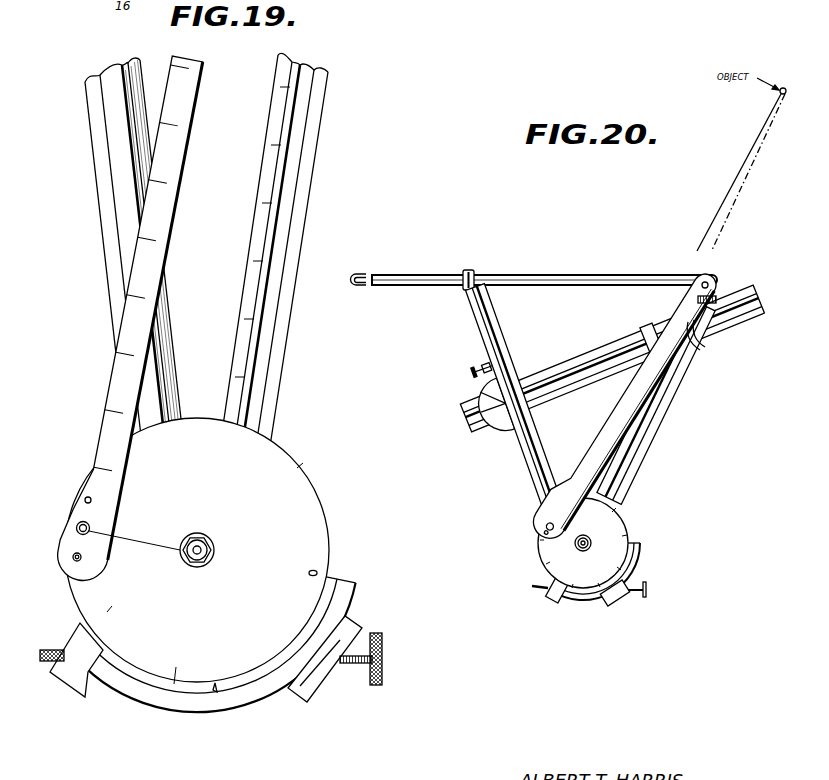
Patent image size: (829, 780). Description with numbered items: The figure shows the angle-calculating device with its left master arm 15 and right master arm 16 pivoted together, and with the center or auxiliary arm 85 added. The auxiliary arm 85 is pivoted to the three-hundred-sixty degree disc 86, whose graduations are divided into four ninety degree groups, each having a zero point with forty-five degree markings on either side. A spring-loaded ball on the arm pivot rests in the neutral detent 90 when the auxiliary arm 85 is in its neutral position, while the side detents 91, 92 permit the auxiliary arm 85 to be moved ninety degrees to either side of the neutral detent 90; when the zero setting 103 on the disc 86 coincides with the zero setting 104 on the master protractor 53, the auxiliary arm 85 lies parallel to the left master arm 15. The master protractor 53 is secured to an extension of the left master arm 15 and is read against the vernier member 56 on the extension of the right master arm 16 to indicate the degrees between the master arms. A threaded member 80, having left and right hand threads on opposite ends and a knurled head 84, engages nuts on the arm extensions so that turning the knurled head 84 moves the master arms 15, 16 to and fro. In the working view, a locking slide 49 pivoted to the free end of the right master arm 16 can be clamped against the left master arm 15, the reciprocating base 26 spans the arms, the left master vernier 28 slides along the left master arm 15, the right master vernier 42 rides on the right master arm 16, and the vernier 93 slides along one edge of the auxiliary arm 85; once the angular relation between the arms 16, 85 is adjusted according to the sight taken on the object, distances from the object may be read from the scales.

In FIG. 19, the left master arm 15 is at (98, 181).
In FIG. 20, the left master arm 15 is at (537, 471).
In FIG. 19, the right master arm 16 is at (310, 183).
In FIG. 20, the right master arm 16 is at (633, 469).
In FIG. 19, the center or auxiliary arm 85 is at (194, 104).
In FIG. 20, the center or auxiliary arm 85 is at (613, 418).
In FIG. 19, the 360 degree disc 86 is at (296, 463).
In FIG. 20, the 360 degree disc 86 is at (628, 527).
In FIG. 19, the neutral detent 90 is at (115, 532).
In FIG. 19, the detent 91 is at (72, 561).
In FIG. 19, the detent 92 is at (86, 497).
In FIG. 19, the zero setting on the disc 103 is at (309, 573).
In FIG. 19, the zero setting on the master protractor 104 is at (216, 686).
In FIG. 19, the master protractor 53 is at (140, 708).
In FIG. 20, the master protractor 53 is at (571, 597).
In FIG. 19, the knurled head 84 is at (383, 645).
In FIG. 20, the locking slide 49 is at (528, 274).
In FIG. 20, the reciprocating base 26 is at (575, 355).
In FIG. 20, the left master vernier 28 is at (513, 376).
In FIG. 20, the vernier of the auxiliary arm 93 is at (653, 330).
In FIG. 20, the right master vernier 42 is at (683, 354).
In FIG. 20, the vernier member 56 is at (630, 579).
In FIG. 20, the threaded member 80 is at (633, 598).